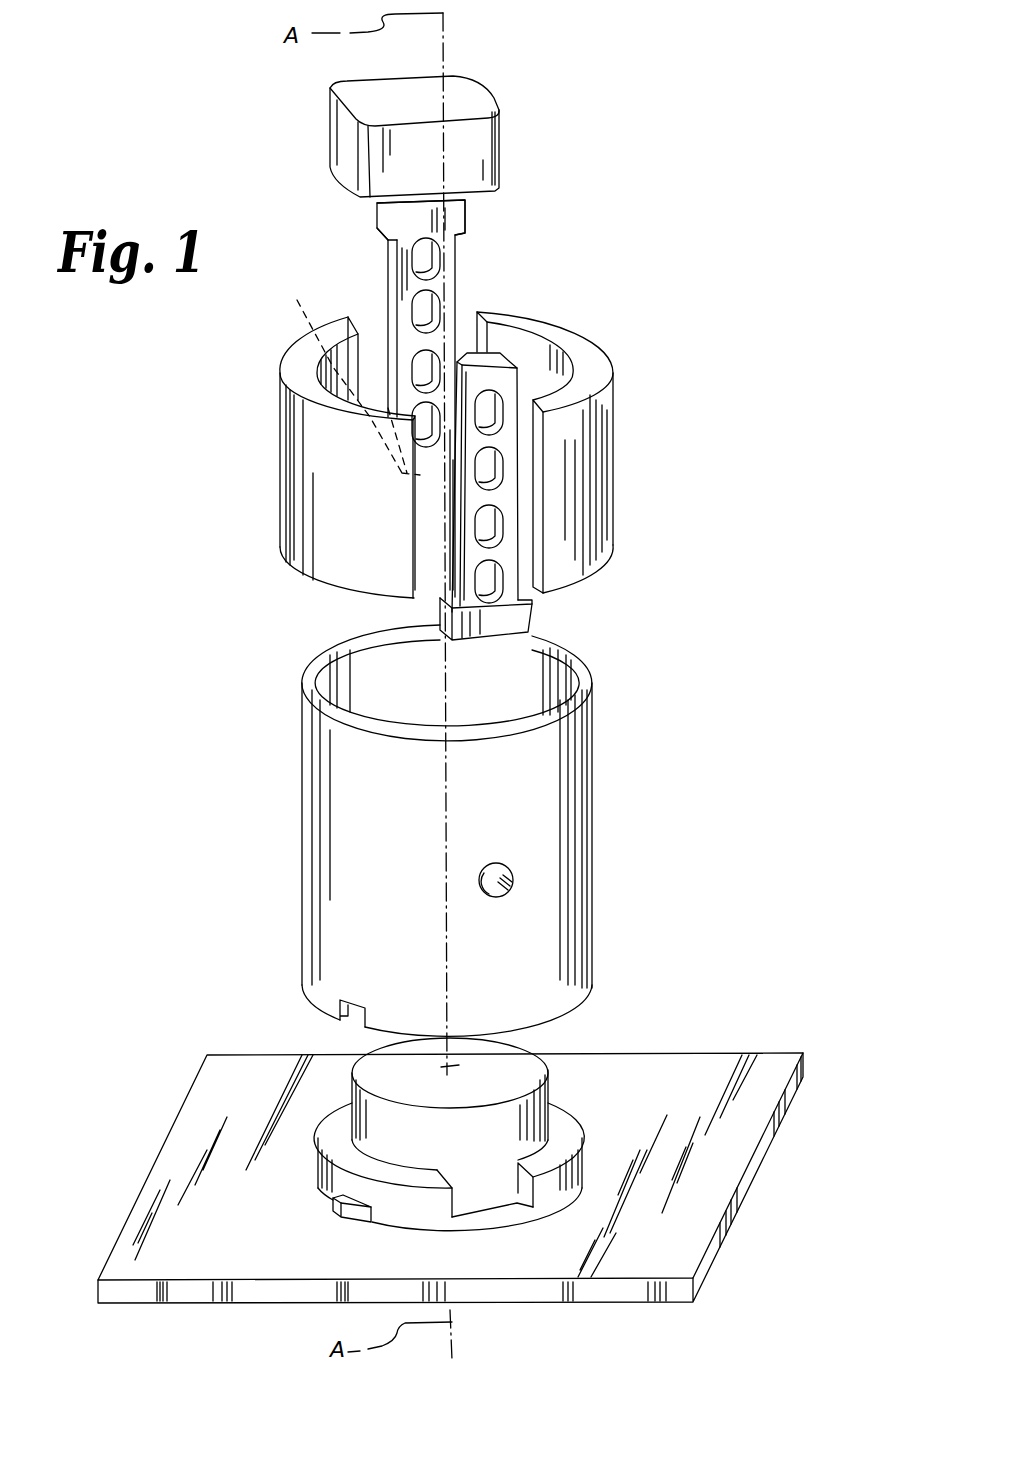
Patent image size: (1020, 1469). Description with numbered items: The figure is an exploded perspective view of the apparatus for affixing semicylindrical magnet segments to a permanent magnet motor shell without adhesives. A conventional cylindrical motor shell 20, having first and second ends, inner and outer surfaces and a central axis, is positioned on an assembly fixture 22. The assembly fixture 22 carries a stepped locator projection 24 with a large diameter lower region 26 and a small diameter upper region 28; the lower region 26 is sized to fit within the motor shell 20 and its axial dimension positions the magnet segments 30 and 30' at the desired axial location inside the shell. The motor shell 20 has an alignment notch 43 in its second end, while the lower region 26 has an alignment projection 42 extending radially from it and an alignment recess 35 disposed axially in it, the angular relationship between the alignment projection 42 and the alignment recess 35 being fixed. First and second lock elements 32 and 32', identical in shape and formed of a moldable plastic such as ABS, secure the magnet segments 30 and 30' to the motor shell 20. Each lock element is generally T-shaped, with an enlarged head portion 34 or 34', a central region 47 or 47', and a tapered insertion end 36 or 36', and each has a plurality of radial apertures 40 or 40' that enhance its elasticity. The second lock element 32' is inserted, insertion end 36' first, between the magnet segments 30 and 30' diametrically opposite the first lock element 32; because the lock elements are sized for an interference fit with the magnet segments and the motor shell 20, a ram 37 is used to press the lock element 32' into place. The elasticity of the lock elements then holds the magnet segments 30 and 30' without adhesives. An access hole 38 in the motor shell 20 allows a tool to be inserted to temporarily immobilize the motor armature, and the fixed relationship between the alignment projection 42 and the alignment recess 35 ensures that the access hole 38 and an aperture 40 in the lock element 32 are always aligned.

The motor shell 20 is at (593, 777).
The assembly fixture 22 is at (828, 1042).
The stepped locator projection 24 is at (566, 1080).
The lower region 26 is at (583, 1123).
The upper region 28 is at (540, 1044).
The magnet segment 30 is at (552, 431).
The magnet segment 30' is at (311, 457).
The first lock element 32 is at (551, 484).
The second lock element 32' is at (490, 342).
The enlarged head portion 34 is at (546, 632).
The enlarged head portion 34' is at (367, 212).
The alignment recess 35 is at (502, 1208).
The tapered insertion end 36 is at (574, 348).
The tapered insertion end 36' is at (345, 376).
The ram 37 is at (500, 112).
The access hole 38 is at (513, 872).
The radial apertures 40 is at (573, 496).
The radial apertures 40' is at (507, 323).
The alignment projection 42 is at (333, 1200).
The alignment notch 43 is at (365, 1022).
The central region 47 is at (339, 485).
The central region 47' is at (334, 324).